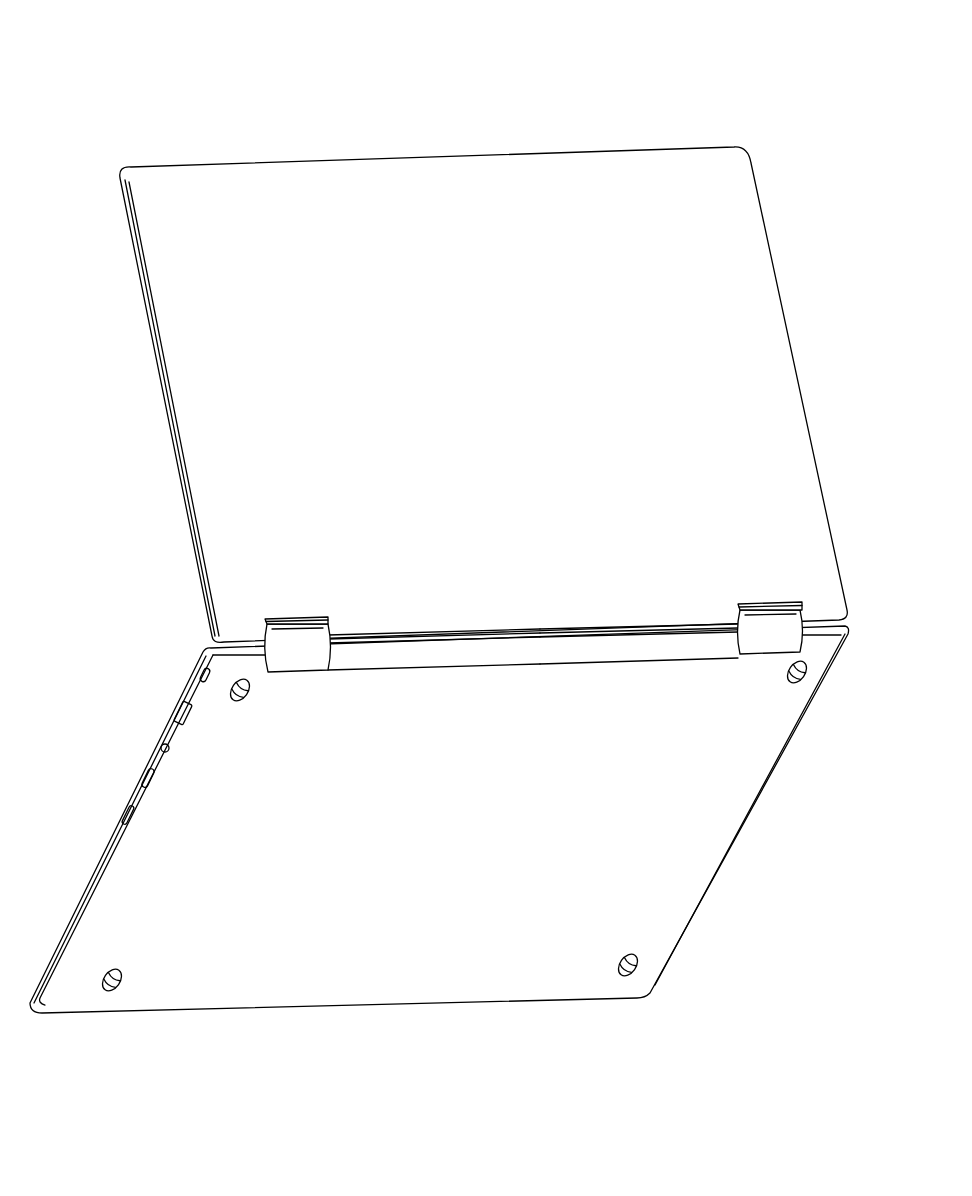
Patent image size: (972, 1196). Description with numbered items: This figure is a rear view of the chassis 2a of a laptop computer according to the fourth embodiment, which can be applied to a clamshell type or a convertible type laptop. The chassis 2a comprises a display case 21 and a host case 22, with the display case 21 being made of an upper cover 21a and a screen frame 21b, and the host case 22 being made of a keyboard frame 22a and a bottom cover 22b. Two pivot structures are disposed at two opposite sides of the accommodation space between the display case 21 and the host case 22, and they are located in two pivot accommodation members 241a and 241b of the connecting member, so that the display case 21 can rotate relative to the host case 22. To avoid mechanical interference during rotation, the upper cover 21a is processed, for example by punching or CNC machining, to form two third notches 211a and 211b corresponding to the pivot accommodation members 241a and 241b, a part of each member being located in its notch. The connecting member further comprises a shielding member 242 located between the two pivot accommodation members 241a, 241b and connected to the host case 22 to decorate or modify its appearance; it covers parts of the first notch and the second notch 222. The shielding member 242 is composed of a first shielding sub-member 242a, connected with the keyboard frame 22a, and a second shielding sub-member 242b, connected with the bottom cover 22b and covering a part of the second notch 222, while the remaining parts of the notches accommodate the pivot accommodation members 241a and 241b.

The chassis 2a is at (132, 48).
The display case 21 is at (76, 387).
The upper cover 21a is at (202, 467).
The screen frame 21b is at (172, 410).
The host case 22 is at (70, 720).
The keyboard frame 22a is at (167, 726).
The bottom cover 22b is at (140, 842).
The third notch 211a is at (783, 594).
The third notch 211b is at (314, 608).
The second notch 222 is at (424, 660).
The pivot accommodation member 241a is at (753, 620).
The pivot accommodation member 241b is at (285, 638).
The shielding member 242 is at (665, 726).
The first shielding sub-member 242a is at (580, 635).
The second shielding sub-member 242b is at (637, 645).